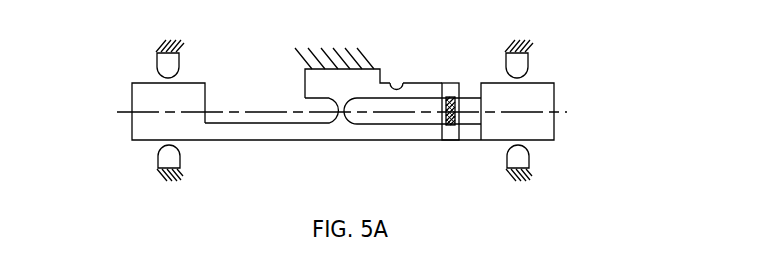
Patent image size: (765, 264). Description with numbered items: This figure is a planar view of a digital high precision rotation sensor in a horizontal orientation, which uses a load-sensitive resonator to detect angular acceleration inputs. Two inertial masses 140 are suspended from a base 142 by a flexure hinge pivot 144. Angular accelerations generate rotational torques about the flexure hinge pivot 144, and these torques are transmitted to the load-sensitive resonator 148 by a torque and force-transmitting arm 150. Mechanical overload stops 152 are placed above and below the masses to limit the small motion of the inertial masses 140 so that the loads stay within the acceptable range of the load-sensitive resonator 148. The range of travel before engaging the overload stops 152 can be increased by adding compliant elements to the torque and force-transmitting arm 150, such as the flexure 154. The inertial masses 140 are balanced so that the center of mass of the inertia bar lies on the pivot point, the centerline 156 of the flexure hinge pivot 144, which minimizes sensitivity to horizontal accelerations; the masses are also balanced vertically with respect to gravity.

The inertial masses 140 is at (155, 100).
The base 142 is at (347, 80).
The flexure hinge pivot 144 is at (341, 111).
The load-sensitive resonator 148 is at (450, 137).
The torque and force-transmitting arm 150 is at (427, 89).
The mechanical overload stops 152 is at (157, 60).
The flexure 154 is at (399, 89).
The centerline 156 is at (567, 112).